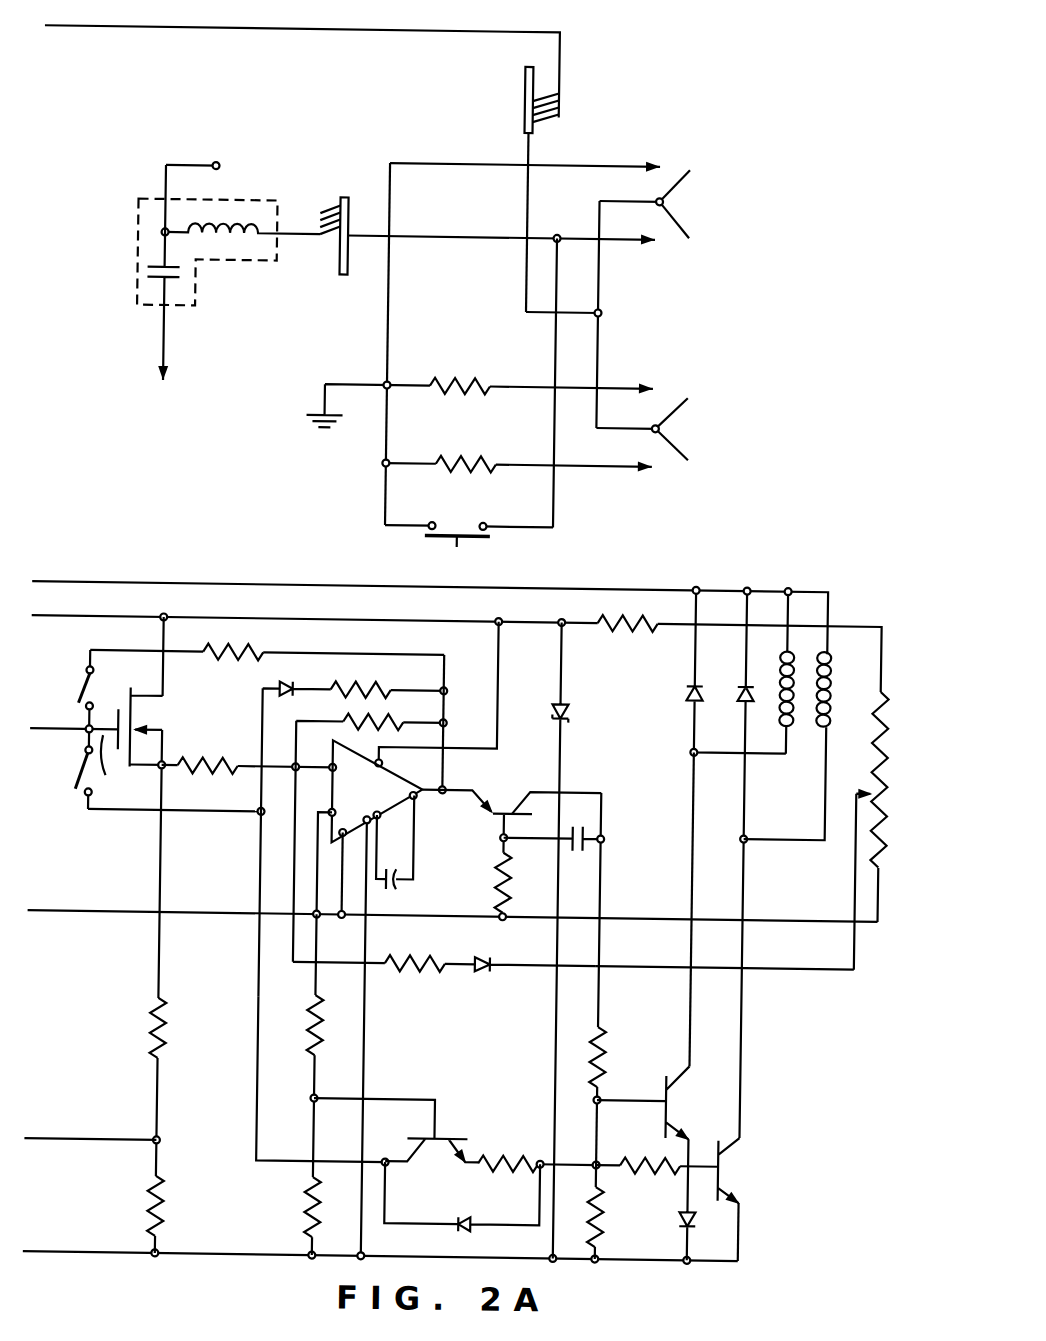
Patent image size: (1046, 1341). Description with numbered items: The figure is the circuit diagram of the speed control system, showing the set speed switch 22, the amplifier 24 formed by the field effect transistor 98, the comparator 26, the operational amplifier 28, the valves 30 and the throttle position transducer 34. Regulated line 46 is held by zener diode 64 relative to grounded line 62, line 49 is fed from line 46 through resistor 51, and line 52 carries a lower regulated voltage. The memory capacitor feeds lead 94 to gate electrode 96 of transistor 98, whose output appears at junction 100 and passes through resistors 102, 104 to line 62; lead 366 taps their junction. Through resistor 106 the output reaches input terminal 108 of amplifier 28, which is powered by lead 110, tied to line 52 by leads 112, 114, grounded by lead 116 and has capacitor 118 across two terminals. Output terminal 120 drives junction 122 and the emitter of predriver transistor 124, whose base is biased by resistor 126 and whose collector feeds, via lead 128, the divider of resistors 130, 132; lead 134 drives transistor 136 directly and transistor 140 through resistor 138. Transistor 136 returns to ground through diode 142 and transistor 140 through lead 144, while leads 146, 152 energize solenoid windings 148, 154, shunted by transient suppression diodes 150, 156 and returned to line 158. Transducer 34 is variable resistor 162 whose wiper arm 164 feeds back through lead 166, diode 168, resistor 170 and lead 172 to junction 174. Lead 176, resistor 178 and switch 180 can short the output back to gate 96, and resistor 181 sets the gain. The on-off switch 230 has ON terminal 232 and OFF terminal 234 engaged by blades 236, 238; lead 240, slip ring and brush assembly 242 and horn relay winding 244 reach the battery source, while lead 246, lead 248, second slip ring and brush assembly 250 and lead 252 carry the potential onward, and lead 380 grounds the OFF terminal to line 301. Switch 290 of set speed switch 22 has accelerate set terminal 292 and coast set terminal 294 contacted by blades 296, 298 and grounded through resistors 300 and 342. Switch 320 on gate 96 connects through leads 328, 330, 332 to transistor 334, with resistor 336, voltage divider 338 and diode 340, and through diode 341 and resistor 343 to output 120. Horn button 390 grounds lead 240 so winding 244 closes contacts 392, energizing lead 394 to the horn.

The set speed switch 22 is at (739, 327).
The amplifier 24 is at (119, 687).
The comparator 26 is at (269, 806).
The amplifier 28 is at (372, 1000).
The valves 30 is at (778, 577).
The throttle position transducer 34 is at (857, 611).
The line 46 is at (103, 620).
The line 49 is at (672, 621).
The resistor 51 is at (620, 628).
The line 52 is at (108, 914).
The grounded line 62 is at (232, 1262).
The zener diode 64 is at (572, 712).
The lead 94 is at (63, 737).
The gate electrode 96 is at (122, 766).
The field effect transistor 98 is at (160, 721).
The junction 100 is at (168, 766).
The resistor 102 is at (168, 1007).
The resistor 104 is at (168, 1200).
The resistor 106 is at (203, 777).
The input terminal 108 is at (333, 758).
The lead 110 is at (500, 672).
The lead 112 is at (317, 872).
The lead 114 is at (350, 913).
The lead 116 is at (380, 1087).
The capacitor 118 is at (389, 892).
The output terminal 120 is at (490, 813).
The junction 122 is at (446, 789).
The predriver transistor amplifier 124 is at (484, 835).
The resistor 126 is at (500, 870).
The lead 128 is at (605, 823).
The resistor 130 is at (612, 1042).
The resistor 132 is at (610, 1230).
The lead 134 is at (605, 1126).
The transistor amplifier 136 is at (684, 1109).
The resistor 138 is at (632, 1160).
The transistor amplifier 140 is at (733, 1164).
The diode 142 is at (682, 1212).
The lead 144 is at (748, 1232).
The lead 146 is at (694, 888).
The solenoid winding 148 is at (792, 738).
The transient suppression diode 150 is at (686, 686).
The lead 152 is at (748, 1045).
The solenoid winding 154 is at (834, 685).
The transient suppression diode 156 is at (743, 702).
The line 158 is at (340, 587).
The variable resistor 162 is at (871, 722).
The wiper arm 164 is at (858, 787).
The lead 166 is at (825, 968).
The diode 168 is at (502, 973).
The resistor 170 is at (415, 974).
The lead 172 is at (296, 964).
The junction 174 is at (295, 767).
The lead 176 is at (446, 712).
The resistor 178 is at (240, 652).
The switch 180 is at (78, 698).
The resistor 181 is at (370, 733).
The on-off rocker switch 230 is at (683, 208).
The ON terminal 232 is at (650, 243).
The OFF terminal 234 is at (658, 160).
The conductive blade 236 is at (686, 232).
The conductive blade 238 is at (686, 174).
The lead 240 is at (432, 234).
The steering wheel slip ring and brush assembly 242 is at (339, 196).
The horn relay winding 244 is at (232, 240).
The lead 246 is at (596, 292).
The lead 248 is at (521, 190).
The second slip ring and brush assembly 250 is at (548, 122).
The lead 252 is at (228, 33).
The rocker type push button switch 290 is at (680, 431).
The accelerate set terminal 292 is at (655, 385).
The coast set terminal 294 is at (655, 470).
The first conductive blade 296 is at (688, 400).
The second blade 298 is at (688, 456).
The resistor 300 is at (436, 369).
The grounded line 301 is at (383, 300).
The switch 320 is at (78, 802).
The lead 328 is at (228, 820).
The lead 330 is at (260, 1086).
The lead 332 is at (286, 1162).
The transistor 334 is at (442, 1136).
The resistor 336 is at (498, 1155).
The voltage divider 338 is at (314, 1053).
The diode 340 is at (478, 1220).
The diode 341 is at (305, 686).
The resistor 342 is at (470, 448).
The resistor 343 is at (378, 685).
The lead 366 is at (100, 1142).
The lead 380 is at (430, 164).
The horn button 390 is at (459, 527).
The contacts 392 is at (142, 276).
The lead 394 is at (161, 350).